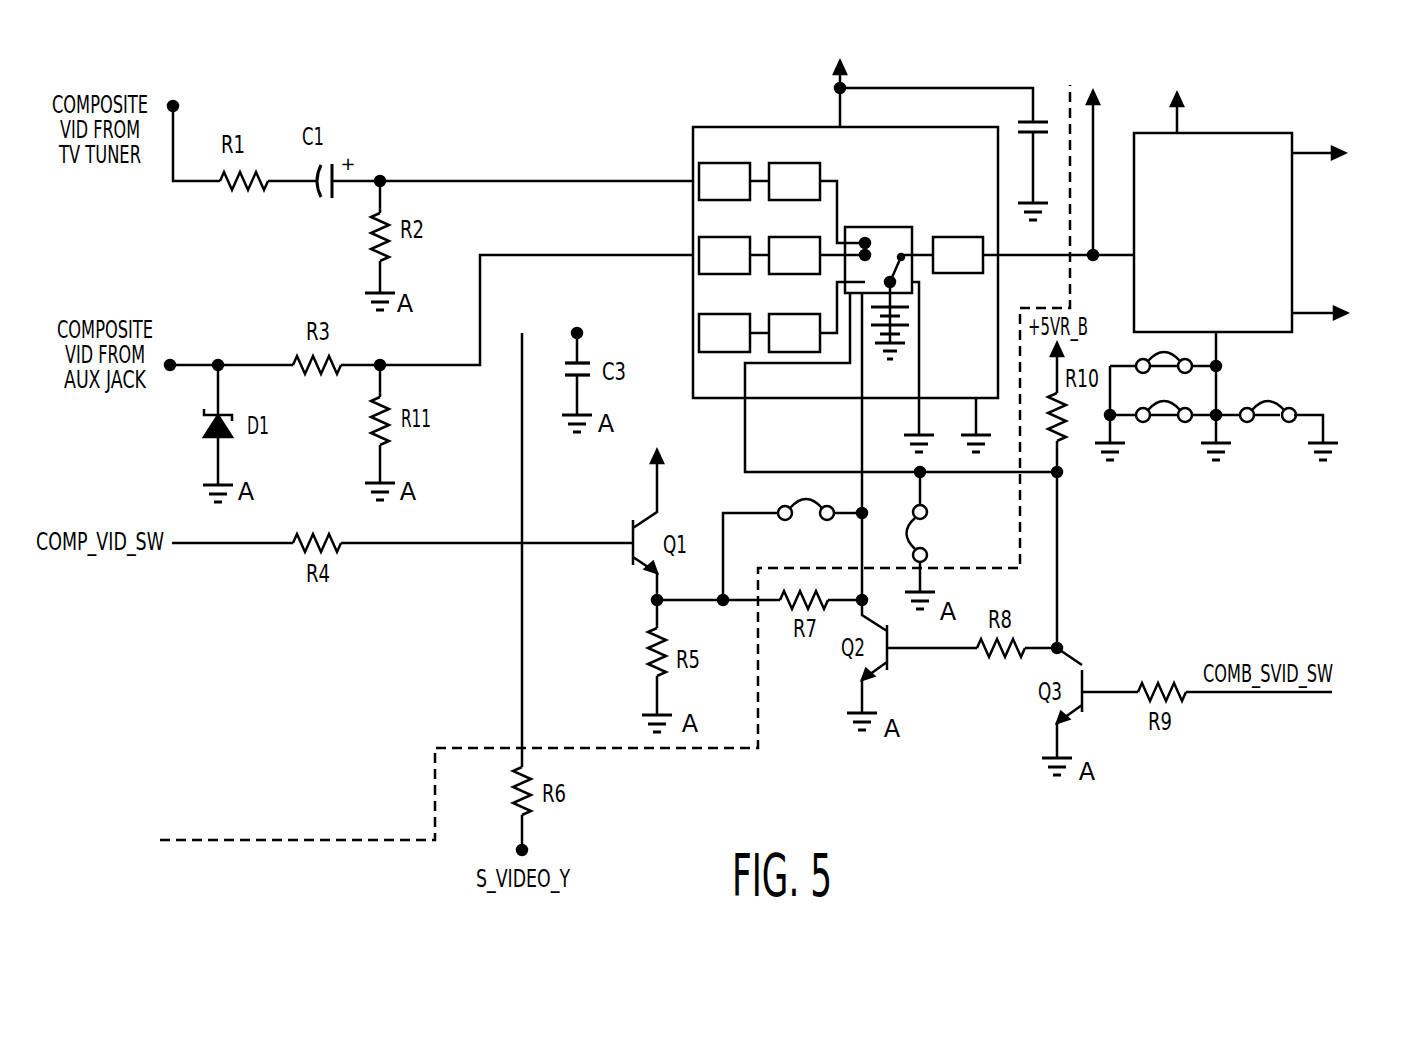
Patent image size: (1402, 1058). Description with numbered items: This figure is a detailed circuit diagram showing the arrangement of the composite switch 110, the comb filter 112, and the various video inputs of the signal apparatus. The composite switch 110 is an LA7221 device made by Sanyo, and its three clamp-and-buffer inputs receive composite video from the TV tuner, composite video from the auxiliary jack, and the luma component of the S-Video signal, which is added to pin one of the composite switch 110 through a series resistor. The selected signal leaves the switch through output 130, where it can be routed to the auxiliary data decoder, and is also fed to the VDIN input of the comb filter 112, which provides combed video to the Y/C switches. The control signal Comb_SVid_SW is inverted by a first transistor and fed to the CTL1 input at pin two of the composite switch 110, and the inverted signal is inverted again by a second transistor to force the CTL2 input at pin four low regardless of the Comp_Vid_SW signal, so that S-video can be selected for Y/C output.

The composite switch 110 is at (727, 127).
The comb filter 112 is at (1270, 133).
The output 130 is at (1096, 152).